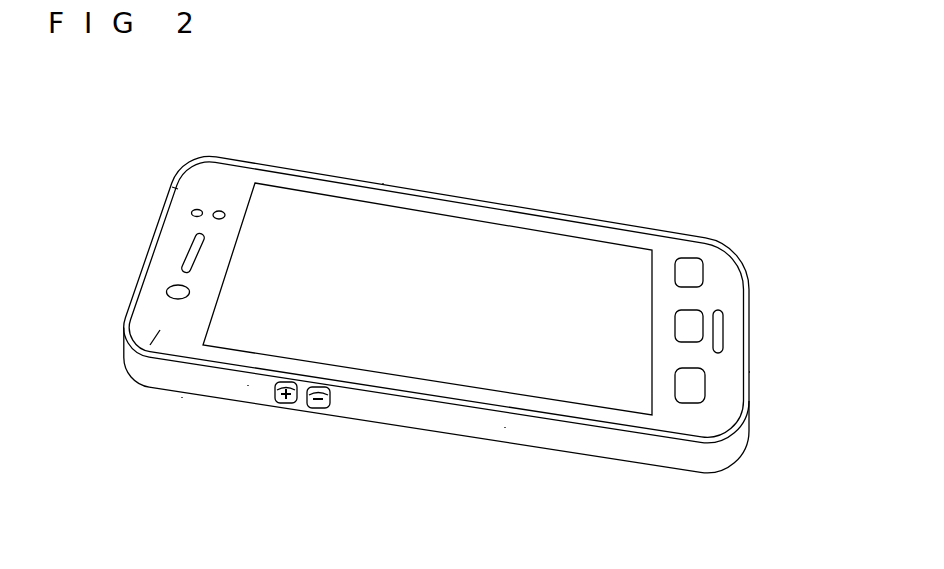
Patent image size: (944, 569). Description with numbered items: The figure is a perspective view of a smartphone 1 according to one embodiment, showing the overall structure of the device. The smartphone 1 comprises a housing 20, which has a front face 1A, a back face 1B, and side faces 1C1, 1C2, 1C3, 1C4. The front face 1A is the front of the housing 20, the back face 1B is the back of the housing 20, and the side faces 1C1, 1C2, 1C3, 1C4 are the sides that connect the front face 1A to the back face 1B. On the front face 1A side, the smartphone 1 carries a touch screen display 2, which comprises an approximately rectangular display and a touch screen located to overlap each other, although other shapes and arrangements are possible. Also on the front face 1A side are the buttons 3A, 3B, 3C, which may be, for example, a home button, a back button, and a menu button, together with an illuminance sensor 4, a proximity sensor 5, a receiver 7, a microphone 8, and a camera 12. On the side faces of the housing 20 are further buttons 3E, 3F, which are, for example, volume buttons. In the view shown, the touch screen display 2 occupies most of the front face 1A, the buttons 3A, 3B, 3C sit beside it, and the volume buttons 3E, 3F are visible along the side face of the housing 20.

The smartphone 1 is at (498, 128).
The front face 1A is at (153, 320).
The back face 1B is at (182, 397).
The side face 1C1 is at (172, 187).
The side face 1C2 is at (750, 373).
The side face 1C3 is at (505, 427).
The side face 1C4 is at (383, 183).
The touch screen display 2 is at (517, 243).
The button 3A is at (707, 393).
The button 3B is at (695, 311).
The button 3C is at (688, 257).
The button 3E is at (288, 403).
The button 3F is at (320, 408).
The illuminance sensor 4 is at (191, 213).
The proximity sensor 5 is at (219, 211).
The receiver 7 is at (190, 244).
The microphone 8 is at (722, 333).
The camera 12 is at (167, 292).
The housing 20 is at (248, 385).